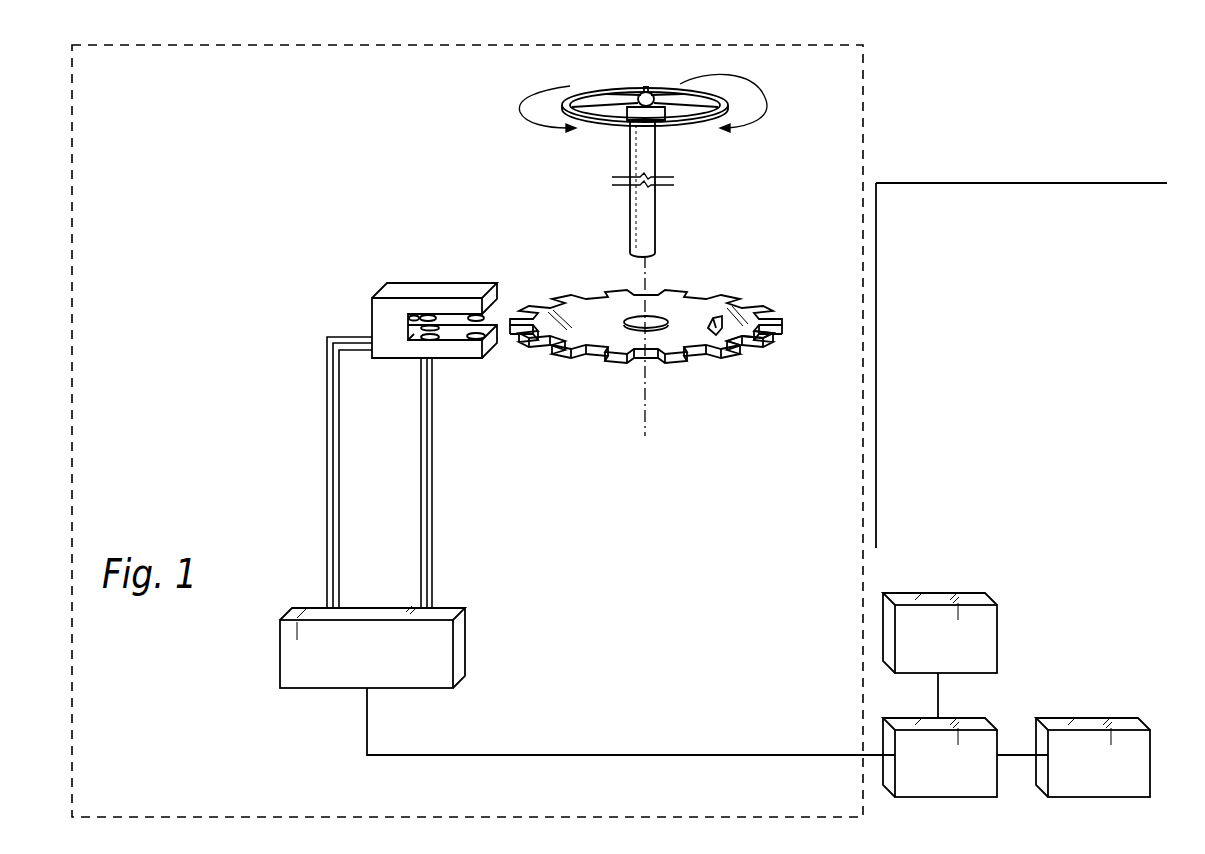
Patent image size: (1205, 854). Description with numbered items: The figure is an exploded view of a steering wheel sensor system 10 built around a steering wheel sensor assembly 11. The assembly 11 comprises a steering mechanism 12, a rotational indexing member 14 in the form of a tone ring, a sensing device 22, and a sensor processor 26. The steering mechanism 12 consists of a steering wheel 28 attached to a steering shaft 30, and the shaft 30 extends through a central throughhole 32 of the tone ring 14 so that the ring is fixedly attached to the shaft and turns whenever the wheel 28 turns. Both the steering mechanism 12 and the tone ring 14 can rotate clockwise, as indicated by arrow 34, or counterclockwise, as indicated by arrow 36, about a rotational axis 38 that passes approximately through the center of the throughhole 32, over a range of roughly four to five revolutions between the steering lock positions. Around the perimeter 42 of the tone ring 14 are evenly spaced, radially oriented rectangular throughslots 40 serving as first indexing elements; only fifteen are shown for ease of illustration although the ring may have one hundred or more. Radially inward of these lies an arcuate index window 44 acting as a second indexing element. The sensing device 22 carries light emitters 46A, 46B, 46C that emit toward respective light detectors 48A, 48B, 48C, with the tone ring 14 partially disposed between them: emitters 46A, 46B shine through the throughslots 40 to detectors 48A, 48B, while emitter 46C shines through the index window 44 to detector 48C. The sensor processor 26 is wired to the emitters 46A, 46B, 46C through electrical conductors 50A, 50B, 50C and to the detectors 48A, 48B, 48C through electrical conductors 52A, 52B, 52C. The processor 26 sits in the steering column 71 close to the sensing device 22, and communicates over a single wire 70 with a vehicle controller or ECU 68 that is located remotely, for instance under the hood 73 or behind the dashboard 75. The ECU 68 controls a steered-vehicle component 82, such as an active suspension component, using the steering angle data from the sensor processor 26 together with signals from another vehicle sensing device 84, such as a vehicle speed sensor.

The steering wheel sensor system 10 is at (325, 177).
The steering wheel sensor assembly 11 is at (291, 728).
The steering mechanism 12 is at (756, 165).
The rotational indexing member 14 is at (607, 310).
The sensing device 22 is at (410, 305).
The sensor processor 26 is at (381, 667).
The steering wheel 28 is at (725, 86).
The steering shaft 30 is at (657, 223).
The central throughhole 32 is at (630, 318).
The arrow 34 is at (764, 105).
The arrow 36 is at (526, 106).
The rotational axis 38 is at (655, 278).
The throughslots 40 is at (765, 347).
The perimeter 42 is at (723, 357).
The index window 44 is at (727, 327).
The light emitter 46A is at (379, 325).
The light emitter 46B is at (432, 318).
The light emitter 46C is at (477, 317).
The light detector 48A is at (430, 336).
The light detector 48B is at (445, 328).
The light detector 48C is at (480, 322).
The electrical conductor 50A is at (327, 415).
The electrical conductor 50B is at (333, 457).
The electrical conductor 50C is at (339, 507).
The electrical conductor 52A is at (421, 418).
The electrical conductor 52B is at (427, 458).
The electrical conductor 52C is at (432, 512).
The vehicle controller or ECU 68 is at (947, 776).
The electrical conductor or wire 70 is at (498, 755).
The steering column 71 is at (863, 110).
The hood 73 is at (1005, 183).
The dashboard 75 is at (876, 293).
The component 82 is at (1101, 776).
The vehicle sensing device 84 is at (947, 652).